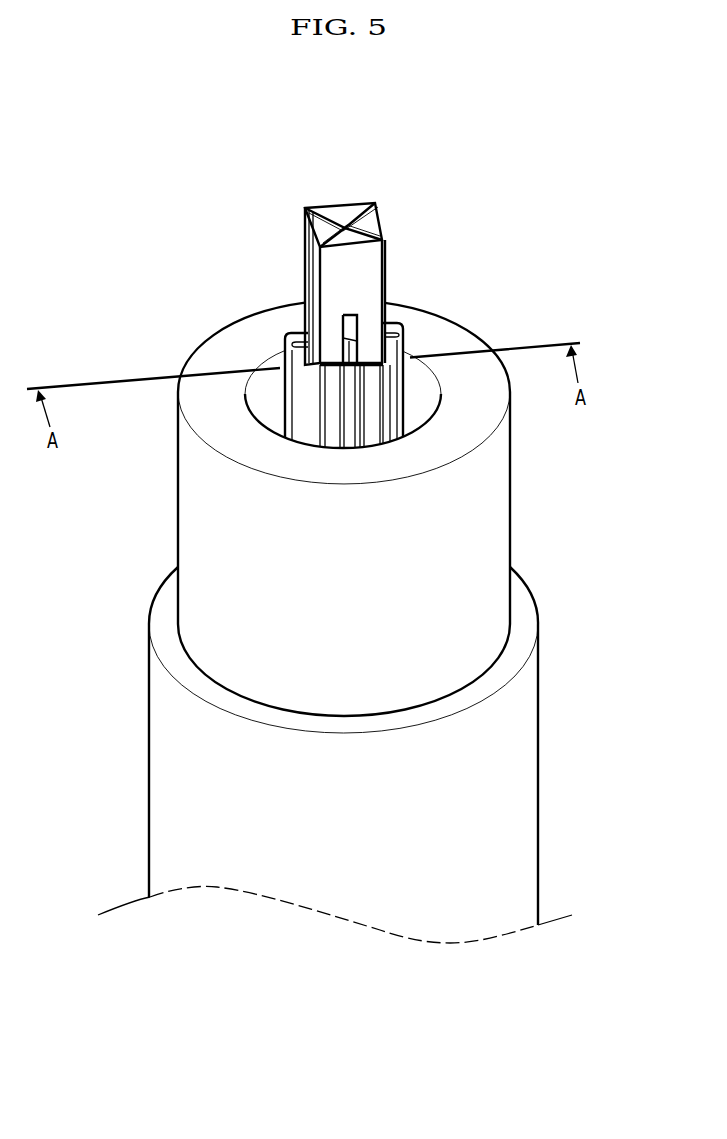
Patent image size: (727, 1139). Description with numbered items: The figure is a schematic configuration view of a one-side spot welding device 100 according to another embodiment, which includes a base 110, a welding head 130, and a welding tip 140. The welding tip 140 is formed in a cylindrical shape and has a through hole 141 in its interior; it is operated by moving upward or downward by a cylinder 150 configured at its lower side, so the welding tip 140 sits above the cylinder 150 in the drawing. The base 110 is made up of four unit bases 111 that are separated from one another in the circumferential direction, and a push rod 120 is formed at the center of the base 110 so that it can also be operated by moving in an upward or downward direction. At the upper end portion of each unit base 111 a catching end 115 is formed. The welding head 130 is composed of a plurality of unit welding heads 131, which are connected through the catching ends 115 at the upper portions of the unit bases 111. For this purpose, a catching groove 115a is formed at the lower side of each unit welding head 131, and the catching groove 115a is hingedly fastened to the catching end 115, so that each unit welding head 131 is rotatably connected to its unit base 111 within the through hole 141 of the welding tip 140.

The spot welding device 100 is at (152, 157).
The base 110 is at (270, 403).
The unit base 111 is at (293, 418).
The catching end 115 is at (284, 358).
The catching groove 115a is at (298, 342).
The push rod 120 is at (333, 415).
The welding head 130 is at (388, 196).
The unit welding head 131 is at (354, 268).
The welding tip 140 is at (480, 510).
The through hole 141 is at (426, 396).
The cylinder 150 is at (508, 767).